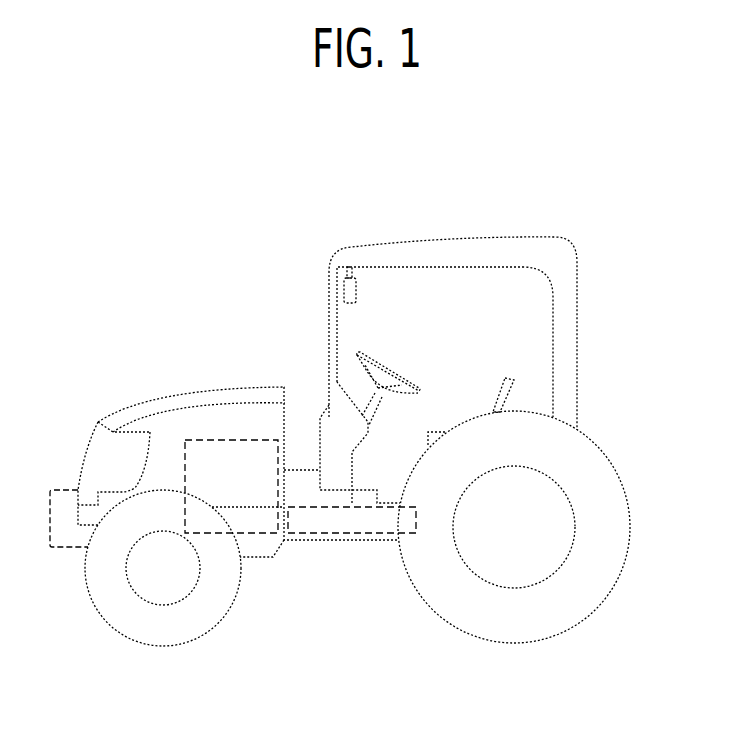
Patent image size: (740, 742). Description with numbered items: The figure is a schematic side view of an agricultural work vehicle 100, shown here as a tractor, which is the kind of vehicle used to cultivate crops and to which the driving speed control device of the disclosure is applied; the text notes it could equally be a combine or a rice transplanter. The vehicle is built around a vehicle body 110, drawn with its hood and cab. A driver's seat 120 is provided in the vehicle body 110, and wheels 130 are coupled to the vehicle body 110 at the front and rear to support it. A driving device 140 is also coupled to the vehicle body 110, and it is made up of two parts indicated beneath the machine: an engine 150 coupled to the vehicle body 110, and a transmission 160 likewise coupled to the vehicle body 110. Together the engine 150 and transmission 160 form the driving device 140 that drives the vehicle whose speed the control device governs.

The agricultural work vehicle 100 is at (57, 196).
The vehicle body 110 is at (227, 387).
The driver's seat 120 is at (512, 397).
The wheels 130 is at (603, 533).
The driving device 140 is at (362, 614).
The engine 150 is at (253, 535).
The transmission 160 is at (328, 533).